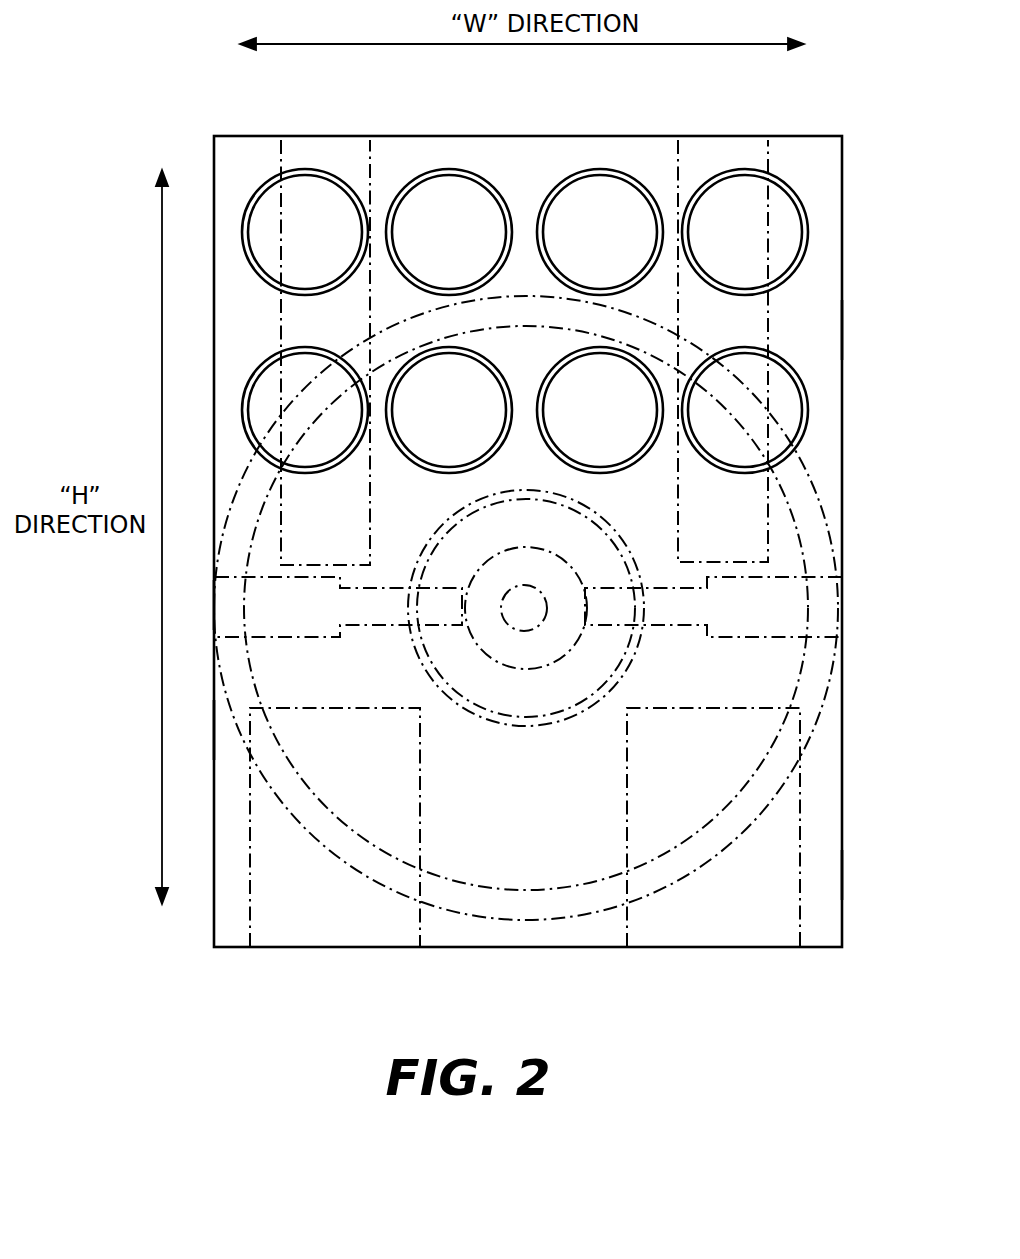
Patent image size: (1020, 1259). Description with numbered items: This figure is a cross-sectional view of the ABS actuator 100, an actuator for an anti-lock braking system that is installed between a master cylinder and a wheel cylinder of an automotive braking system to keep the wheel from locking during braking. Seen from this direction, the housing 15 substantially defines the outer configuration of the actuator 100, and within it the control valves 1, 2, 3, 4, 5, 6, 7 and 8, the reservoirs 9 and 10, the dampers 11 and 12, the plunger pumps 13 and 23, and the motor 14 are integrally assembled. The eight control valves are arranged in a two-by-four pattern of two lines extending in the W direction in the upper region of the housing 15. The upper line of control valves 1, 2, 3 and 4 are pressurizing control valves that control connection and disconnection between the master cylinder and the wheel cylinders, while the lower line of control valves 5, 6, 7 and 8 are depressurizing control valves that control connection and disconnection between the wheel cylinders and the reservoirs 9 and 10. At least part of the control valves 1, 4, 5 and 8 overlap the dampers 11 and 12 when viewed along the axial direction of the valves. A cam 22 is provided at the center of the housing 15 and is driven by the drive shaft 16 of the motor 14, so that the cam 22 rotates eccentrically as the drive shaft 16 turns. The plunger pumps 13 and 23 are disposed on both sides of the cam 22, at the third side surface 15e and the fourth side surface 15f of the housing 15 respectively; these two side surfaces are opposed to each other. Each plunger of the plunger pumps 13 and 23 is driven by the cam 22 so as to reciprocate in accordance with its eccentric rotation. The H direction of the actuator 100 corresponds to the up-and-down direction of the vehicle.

The actuator 100 is at (842, 162).
The control valve 1 is at (320, 170).
The control valve 2 is at (464, 170).
The control valve 3 is at (615, 170).
The control valve 4 is at (752, 170).
The control valve 5 is at (258, 372).
The control valve 6 is at (418, 458).
The control valve 7 is at (632, 458).
The control valve 8 is at (808, 375).
The reservoir 9 is at (748, 960).
The reservoir 10 is at (288, 956).
The damper 11 is at (724, 132).
The damper 12 is at (299, 136).
The plunger pump 13 is at (843, 605).
The motor 14 is at (820, 718).
The housing 15 is at (843, 872).
The third side surface 15e is at (842, 330).
The fourth side surface 15f is at (213, 728).
The drive shaft 16 is at (540, 626).
The cam 22 is at (493, 680).
The plunger pump 23 is at (213, 603).